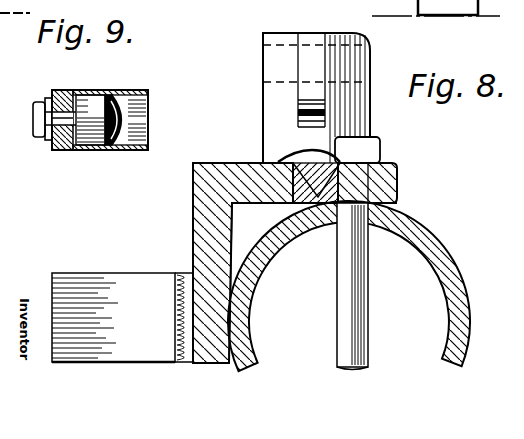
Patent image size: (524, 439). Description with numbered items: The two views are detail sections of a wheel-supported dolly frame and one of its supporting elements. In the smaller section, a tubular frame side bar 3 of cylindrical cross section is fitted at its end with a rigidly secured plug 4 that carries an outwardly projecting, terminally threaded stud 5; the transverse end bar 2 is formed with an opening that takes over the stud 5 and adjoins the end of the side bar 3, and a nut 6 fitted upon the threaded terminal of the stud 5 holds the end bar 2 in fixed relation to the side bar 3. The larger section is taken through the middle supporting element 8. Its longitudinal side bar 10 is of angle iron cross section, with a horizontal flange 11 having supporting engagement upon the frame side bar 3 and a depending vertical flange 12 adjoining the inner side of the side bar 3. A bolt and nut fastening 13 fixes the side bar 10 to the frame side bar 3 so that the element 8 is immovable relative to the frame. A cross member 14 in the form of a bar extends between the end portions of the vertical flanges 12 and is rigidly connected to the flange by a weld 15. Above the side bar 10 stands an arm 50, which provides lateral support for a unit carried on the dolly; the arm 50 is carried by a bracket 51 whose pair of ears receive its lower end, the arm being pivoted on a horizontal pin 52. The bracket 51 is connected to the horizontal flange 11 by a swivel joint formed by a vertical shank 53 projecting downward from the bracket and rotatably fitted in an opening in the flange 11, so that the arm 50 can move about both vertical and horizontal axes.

In FIG. 9, the end bar 2 is at (63, 91).
In FIG. 9, the side bar 3 is at (134, 96).
In FIG. 8, the side bar 3 is at (462, 282).
In FIG. 9, the plug 4 is at (92, 101).
In FIG. 9, the stud 5 is at (61, 150).
In FIG. 9, the nut 6 is at (40, 136).
In FIG. 8, the middle supporting element 8 is at (75, 272).
In FIG. 8, the side bar 10 is at (192, 190).
In FIG. 8, the horizontal flange 11 is at (382, 180).
In FIG. 8, the vertical flange 12 is at (200, 215).
In FIG. 8, the bolt and nut fastening 13 is at (382, 148).
In FIG. 8, the cross member 14 is at (107, 283).
In FIG. 8, the weld 15 is at (183, 272).
In FIG. 8, the arm 50 is at (308, 44).
In FIG. 8, the bracket 51 is at (276, 100).
In FIG. 8, the horizontal pin 52 is at (263, 69).
In FIG. 8, the vertical shank 53 is at (283, 159).